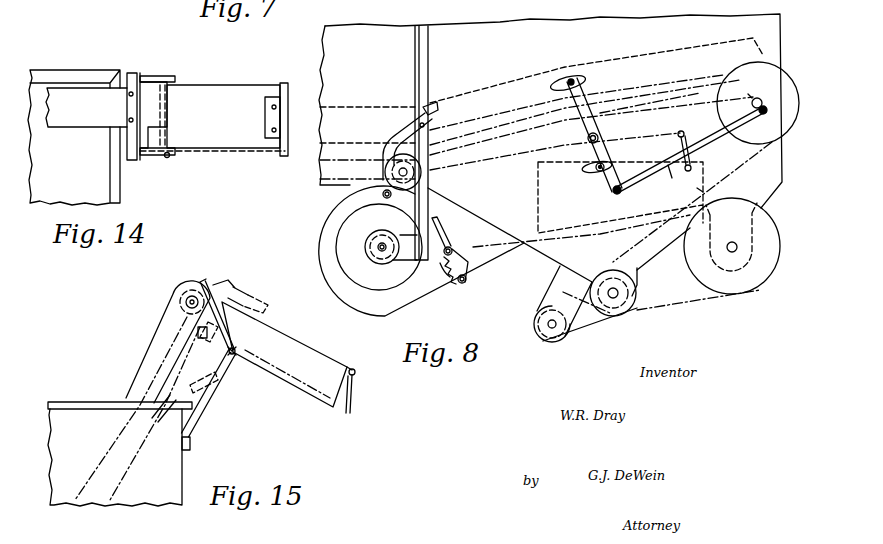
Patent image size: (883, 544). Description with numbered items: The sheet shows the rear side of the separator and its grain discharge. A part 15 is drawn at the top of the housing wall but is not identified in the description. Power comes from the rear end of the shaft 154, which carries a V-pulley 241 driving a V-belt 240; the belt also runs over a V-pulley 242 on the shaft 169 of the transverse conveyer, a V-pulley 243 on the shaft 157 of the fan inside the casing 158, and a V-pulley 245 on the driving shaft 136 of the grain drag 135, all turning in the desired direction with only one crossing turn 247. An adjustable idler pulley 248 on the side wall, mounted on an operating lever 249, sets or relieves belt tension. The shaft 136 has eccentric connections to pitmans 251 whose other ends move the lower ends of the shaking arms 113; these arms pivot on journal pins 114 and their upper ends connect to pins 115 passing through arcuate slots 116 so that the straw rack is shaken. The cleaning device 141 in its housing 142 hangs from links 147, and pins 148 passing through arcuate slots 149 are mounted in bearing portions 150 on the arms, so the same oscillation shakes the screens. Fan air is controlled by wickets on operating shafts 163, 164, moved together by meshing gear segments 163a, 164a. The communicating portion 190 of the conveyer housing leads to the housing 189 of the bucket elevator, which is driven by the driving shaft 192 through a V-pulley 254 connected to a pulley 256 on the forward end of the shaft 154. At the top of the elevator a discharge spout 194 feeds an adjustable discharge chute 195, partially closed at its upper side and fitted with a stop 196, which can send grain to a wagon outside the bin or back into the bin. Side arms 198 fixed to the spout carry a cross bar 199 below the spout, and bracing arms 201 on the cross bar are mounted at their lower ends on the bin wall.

In FIG. 8, the frame side panel 15 is at (449, 27).
In FIG. 8, the shaking arms 113 is at (586, 96).
In FIG. 8, the journal pins 114 is at (598, 138).
In FIG. 8, the pins 115 is at (573, 78).
In FIG. 8, the arcuate slots 116 is at (553, 88).
In FIG. 8, the grain drag 135 is at (682, 105).
In FIG. 8, the driving shaft 136 is at (758, 98).
In FIG. 8, the cleaning device 141 is at (527, 201).
In FIG. 8, the housing 142 is at (665, 252).
In FIG. 8, the links 147 is at (684, 140).
In FIG. 8, the pins 148 is at (612, 190).
In FIG. 8, the arcuate slots 149 is at (583, 168).
In FIG. 8, the bearing portions 150 is at (606, 167).
In FIG. 8, the shaft 154 is at (611, 291).
In FIG. 8, the shaft 157 is at (386, 236).
In FIG. 8, the casing 158 is at (318, 243).
In FIG. 8, the operating shaft 163 is at (448, 247).
In FIG. 8, the gear segment 163a is at (437, 275).
In FIG. 8, the operating shaft 164 is at (465, 275).
In FIG. 8, the gear segment 164a is at (475, 302).
In FIG. 8, the shaft 169 is at (732, 242).
In FIG. 15, the housing 189 is at (144, 362).
In FIG. 8, the communicating portion 190 is at (548, 292).
In FIG. 8, the driving shaft 192 is at (548, 325).
In FIG. 14, the discharge spout 194 is at (152, 96).
In FIG. 15, the discharge spout 194 is at (235, 279).
In FIG. 14, the adjustable discharge chute 195 is at (241, 86).
In FIG. 15, the adjustable discharge chute 195 is at (308, 350).
In FIG. 14, the stop 196 is at (170, 118).
In FIG. 15, the stop 196 is at (220, 358).
In FIG. 14, the side arms 198 is at (147, 72).
In FIG. 15, the side arms 198 is at (204, 282).
In FIG. 14, the cross bar 199 is at (168, 158).
In FIG. 15, the cross bar 199 is at (236, 351).
In FIG. 14, the bracing arms 201 is at (175, 79).
In FIG. 15, the bracing arms 201 is at (222, 378).
In FIG. 8, the V-belt 240 is at (370, 220).
In FIG. 8, the V-pulley 241 is at (640, 292).
In FIG. 8, the V-pulley 242 is at (768, 281).
In FIG. 8, the V-pulley 243 is at (384, 262).
In FIG. 8, the V-pulley 245 is at (741, 125).
In FIG. 8, the crossing turn 247 is at (697, 190).
In FIG. 8, the adjustable idler pulley 248 is at (384, 172).
In FIG. 8, the operating lever 249 is at (394, 132).
In FIG. 8, the pitmans 251 is at (668, 168).
In FIG. 8, the V-pulley 254 is at (548, 343).
In FIG. 8, the pulley 256 is at (625, 315).